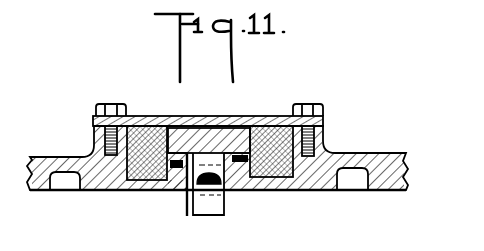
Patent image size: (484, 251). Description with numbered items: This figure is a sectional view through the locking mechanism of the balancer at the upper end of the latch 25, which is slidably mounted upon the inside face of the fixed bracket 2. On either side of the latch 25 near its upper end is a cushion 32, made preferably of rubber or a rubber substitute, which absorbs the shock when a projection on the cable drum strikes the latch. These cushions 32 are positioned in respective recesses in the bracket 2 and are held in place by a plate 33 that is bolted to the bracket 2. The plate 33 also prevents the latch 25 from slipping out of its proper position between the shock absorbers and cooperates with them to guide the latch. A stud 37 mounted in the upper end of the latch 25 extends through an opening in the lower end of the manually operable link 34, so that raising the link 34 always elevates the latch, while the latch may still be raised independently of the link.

The fixed bracket 2 is at (63, 158).
The plate 33 is at (140, 116).
The cushions 32 is at (165, 117).
The latch 25 is at (257, 96).
The manually operable link 34 is at (171, 188).
The stud 37 is at (210, 211).